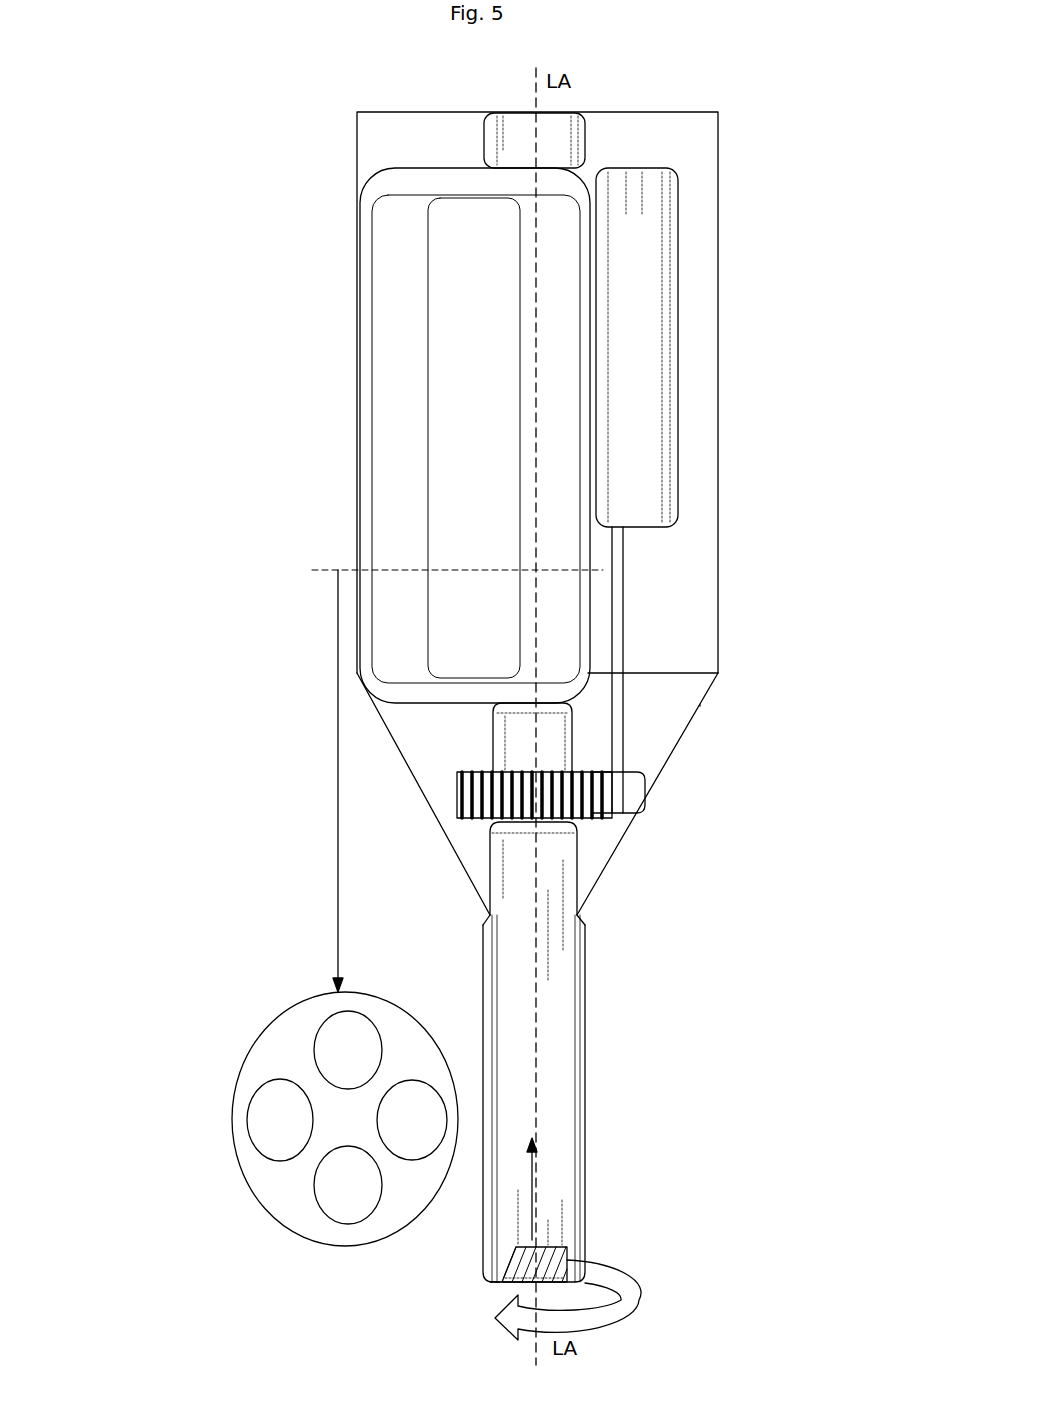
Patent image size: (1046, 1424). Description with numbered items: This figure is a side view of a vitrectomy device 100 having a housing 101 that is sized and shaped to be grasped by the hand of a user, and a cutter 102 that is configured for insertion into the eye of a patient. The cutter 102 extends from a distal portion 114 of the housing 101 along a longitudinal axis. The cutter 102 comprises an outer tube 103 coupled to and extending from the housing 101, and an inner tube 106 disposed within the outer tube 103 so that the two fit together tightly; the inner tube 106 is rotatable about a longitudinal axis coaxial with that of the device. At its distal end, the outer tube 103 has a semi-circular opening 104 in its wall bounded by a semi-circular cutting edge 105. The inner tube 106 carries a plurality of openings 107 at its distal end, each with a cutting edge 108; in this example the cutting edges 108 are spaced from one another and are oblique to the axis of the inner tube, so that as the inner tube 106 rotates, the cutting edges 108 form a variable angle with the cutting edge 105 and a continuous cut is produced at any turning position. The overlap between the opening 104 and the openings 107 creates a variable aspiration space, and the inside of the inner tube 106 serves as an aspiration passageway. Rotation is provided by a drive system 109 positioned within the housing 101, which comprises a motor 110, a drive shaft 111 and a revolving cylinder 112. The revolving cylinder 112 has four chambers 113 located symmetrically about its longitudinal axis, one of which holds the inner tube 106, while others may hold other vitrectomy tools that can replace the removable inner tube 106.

The vitrectomy device 100 is at (730, 88).
The housing 101 is at (377, 138).
The cutter 102 is at (583, 970).
The outer tube 103 is at (558, 855).
The opening 104 is at (533, 1250).
The cutting edge 105 is at (493, 1278).
The inner tube 106 is at (525, 737).
The openings 107 is at (547, 1263).
The cutting edges 108 is at (558, 1270).
The drive system 109 is at (587, 797).
The motor 110 is at (645, 287).
The drive shaft 111 is at (553, 141).
The revolving cylinder 112 is at (308, 1013).
The chambers 113 is at (345, 1048).
The distal portion 114 is at (665, 711).